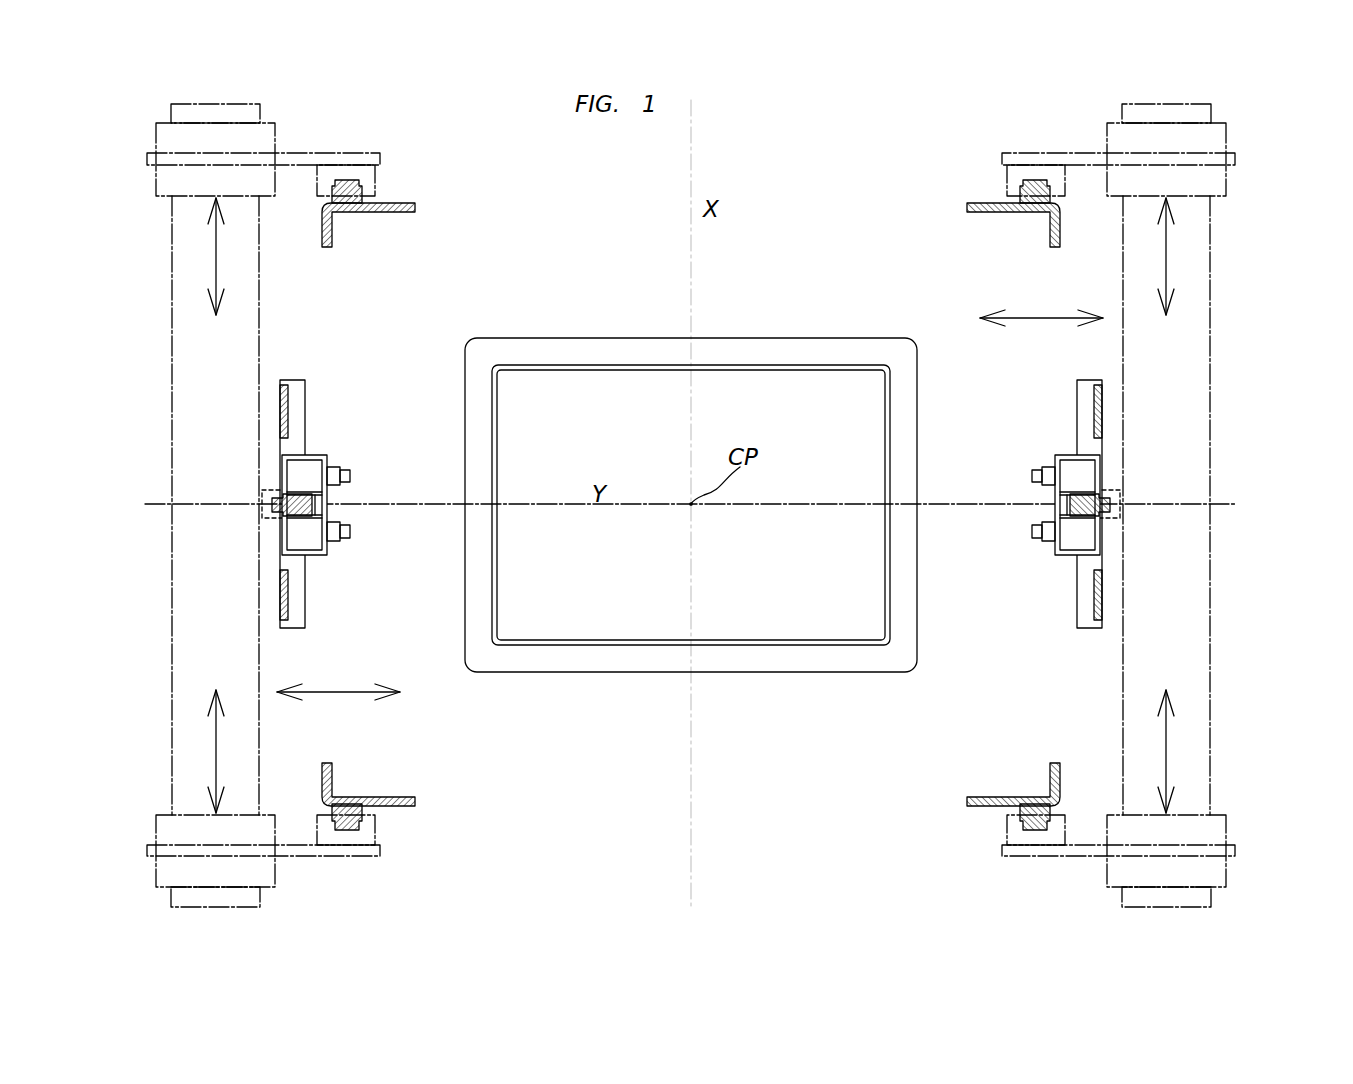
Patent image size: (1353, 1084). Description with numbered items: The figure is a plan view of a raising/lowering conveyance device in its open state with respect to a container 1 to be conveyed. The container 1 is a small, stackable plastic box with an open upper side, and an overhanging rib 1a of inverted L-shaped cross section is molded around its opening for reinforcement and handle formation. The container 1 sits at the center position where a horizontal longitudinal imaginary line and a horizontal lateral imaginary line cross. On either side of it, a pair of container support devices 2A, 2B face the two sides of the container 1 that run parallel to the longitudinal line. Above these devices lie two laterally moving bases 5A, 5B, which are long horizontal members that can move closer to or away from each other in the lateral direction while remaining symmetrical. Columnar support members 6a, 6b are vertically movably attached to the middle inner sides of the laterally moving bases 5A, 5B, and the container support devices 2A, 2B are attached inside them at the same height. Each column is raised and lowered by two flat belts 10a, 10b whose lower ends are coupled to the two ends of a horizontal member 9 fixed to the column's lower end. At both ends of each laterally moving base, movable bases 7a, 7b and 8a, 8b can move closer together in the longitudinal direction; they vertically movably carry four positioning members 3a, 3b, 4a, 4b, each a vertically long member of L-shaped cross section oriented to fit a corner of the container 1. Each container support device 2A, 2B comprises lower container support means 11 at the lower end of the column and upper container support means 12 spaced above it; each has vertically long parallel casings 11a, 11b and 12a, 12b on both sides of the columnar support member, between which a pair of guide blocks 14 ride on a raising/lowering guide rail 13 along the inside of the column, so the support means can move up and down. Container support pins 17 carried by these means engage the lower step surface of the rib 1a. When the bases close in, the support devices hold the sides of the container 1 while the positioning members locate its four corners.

The article conveying container 1 is at (652, 672).
The overhanging rib 1a is at (744, 665).
The container support device 2A is at (1048, 551).
The container support device 2B is at (335, 551).
The positioning member 3a is at (993, 203).
The positioning member 3b is at (985, 807).
The positioning member 4a is at (388, 807).
The positioning member 4b is at (390, 203).
The laterally moving base 5A is at (1185, 352).
The laterally moving base 5B is at (183, 308).
The columnar support member 6a is at (1093, 513).
The columnar support member 6b is at (290, 496).
The movable base 7a is at (1187, 183).
The movable base 7b is at (1187, 826).
The movable base 8a is at (200, 832).
The movable base 8b is at (200, 183).
The horizontal member 9 is at (300, 397).
The raising/lowering driving flat belt 10a is at (1100, 412).
The raising/lowering driving flat belt 10b is at (283, 410).
The lower container support means 11 is at (691, 509).
The parallel casing 11a is at (819, 514).
The parallel casing 11b is at (691, 522).
The upper container support means 12 is at (280, 530).
The parallel casing 12a is at (312, 540).
The parallel casing 12b is at (312, 468).
The raising/lowering guide rail 13 is at (304, 492).
The guide block 14 is at (313, 518).
The screw 17 is at (350, 484).